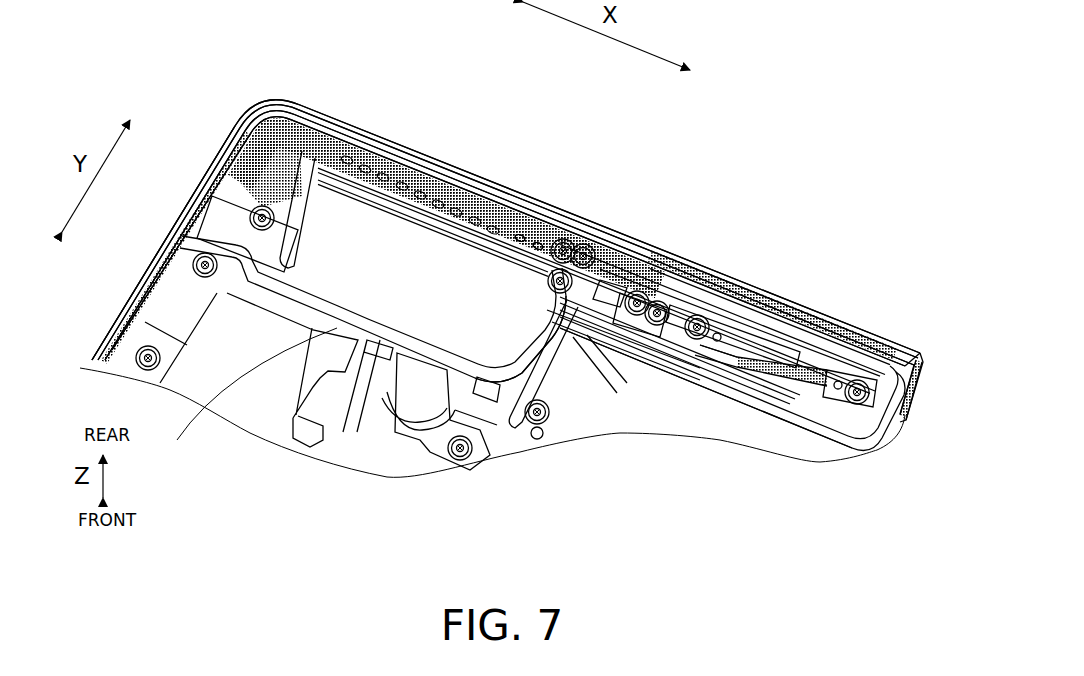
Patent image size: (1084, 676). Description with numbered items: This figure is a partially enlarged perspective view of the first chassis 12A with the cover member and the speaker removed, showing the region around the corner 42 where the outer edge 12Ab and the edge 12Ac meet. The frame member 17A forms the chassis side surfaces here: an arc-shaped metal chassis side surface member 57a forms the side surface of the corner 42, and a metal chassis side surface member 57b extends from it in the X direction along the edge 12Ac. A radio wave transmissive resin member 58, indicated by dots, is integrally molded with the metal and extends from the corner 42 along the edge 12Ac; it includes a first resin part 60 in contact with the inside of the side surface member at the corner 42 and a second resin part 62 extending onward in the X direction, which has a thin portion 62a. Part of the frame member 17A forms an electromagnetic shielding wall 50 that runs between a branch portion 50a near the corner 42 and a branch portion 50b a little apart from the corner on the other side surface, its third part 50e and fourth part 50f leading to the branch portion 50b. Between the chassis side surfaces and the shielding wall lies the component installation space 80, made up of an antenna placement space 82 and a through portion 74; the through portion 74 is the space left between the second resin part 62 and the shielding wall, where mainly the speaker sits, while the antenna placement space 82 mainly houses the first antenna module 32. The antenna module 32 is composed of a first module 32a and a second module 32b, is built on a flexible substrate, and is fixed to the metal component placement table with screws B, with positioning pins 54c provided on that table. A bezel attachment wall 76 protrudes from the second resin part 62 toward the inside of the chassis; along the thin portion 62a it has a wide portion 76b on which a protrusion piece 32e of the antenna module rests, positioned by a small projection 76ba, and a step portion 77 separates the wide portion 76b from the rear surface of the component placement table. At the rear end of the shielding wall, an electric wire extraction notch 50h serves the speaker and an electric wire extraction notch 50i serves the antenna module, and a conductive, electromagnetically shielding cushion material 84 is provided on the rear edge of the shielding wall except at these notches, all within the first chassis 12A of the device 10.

The imaging device 10 is at (882, 181).
The first chassis 12A is at (518, 230).
The outer edge 12Ab is at (118, 323).
The edge 12Ac is at (818, 320).
The frame member 17A is at (213, 200).
The first antenna module 32 is at (683, 182).
The first module 32a is at (760, 265).
The second module 32b is at (670, 275).
The protrusion piece 32e is at (564, 153).
The corner 42 is at (310, 112).
The electromagnetic shielding wall 50 is at (797, 420).
The branch portion 50a is at (178, 214).
The branch portion 50b is at (897, 343).
The third part 50e is at (706, 462).
The fourth part 50f is at (900, 430).
The electric wire extraction notch 50h is at (150, 473).
The electric wire extraction notch 50i is at (578, 400).
The positioning pin 54c is at (703, 345).
The chassis side surface member 57a is at (277, 104).
The chassis side surface member 57b is at (430, 150).
The resin member 58 is at (397, 148).
The first resin part 60 is at (266, 132).
The second resin part 62 is at (465, 170).
The thin portion 62a is at (537, 197).
The through portion 74 is at (450, 147).
The bezel attachment wall 76 is at (347, 205).
The wide portion 76b is at (515, 205).
The small projection 76ba is at (500, 237).
The step portion 77 is at (563, 333).
The component installation space 80 is at (372, 138).
The antenna placement space 82 is at (773, 340).
The cushion material 84 is at (767, 350).
The screw B is at (722, 335).